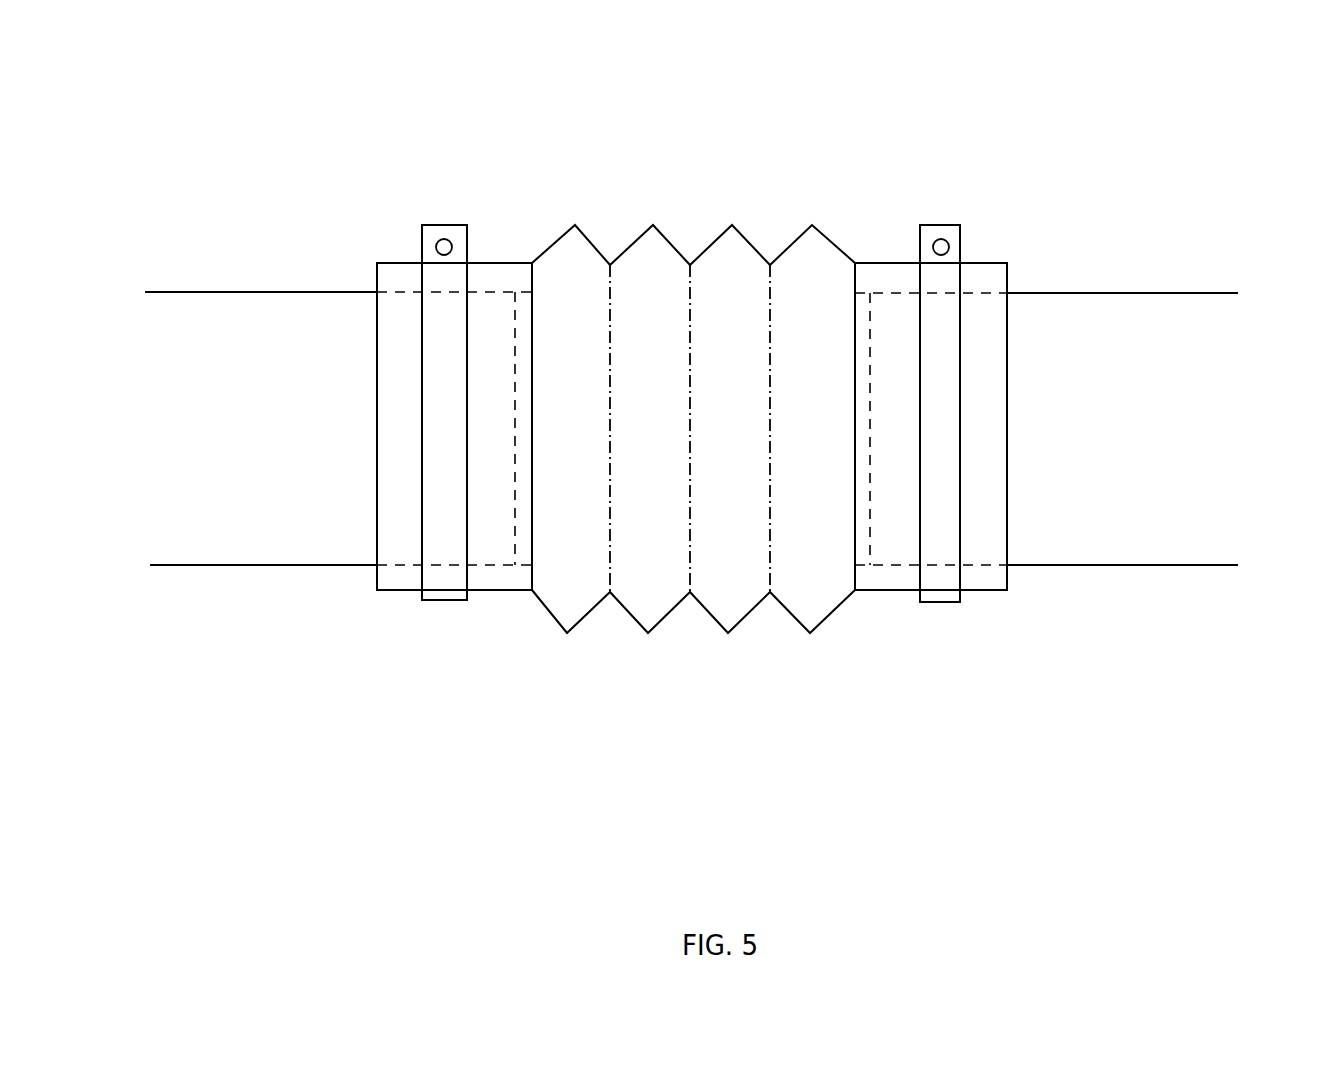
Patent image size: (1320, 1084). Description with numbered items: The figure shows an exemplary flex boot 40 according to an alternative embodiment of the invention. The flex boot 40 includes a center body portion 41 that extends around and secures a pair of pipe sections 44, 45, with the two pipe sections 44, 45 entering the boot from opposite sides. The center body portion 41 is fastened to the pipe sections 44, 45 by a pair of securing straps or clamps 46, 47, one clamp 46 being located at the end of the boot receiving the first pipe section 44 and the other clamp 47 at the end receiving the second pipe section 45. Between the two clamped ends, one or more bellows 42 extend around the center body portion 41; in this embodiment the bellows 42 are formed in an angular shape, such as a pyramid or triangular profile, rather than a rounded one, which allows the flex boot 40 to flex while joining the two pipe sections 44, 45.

The flex boot 40 is at (866, 126).
The center body portion 41 is at (725, 532).
The bellows 42 is at (580, 228).
The pipe section 44 is at (202, 300).
The pipe section 45 is at (1102, 340).
The securing strap/clamp 46 is at (445, 227).
The securing strap/clamp 47 is at (955, 230).